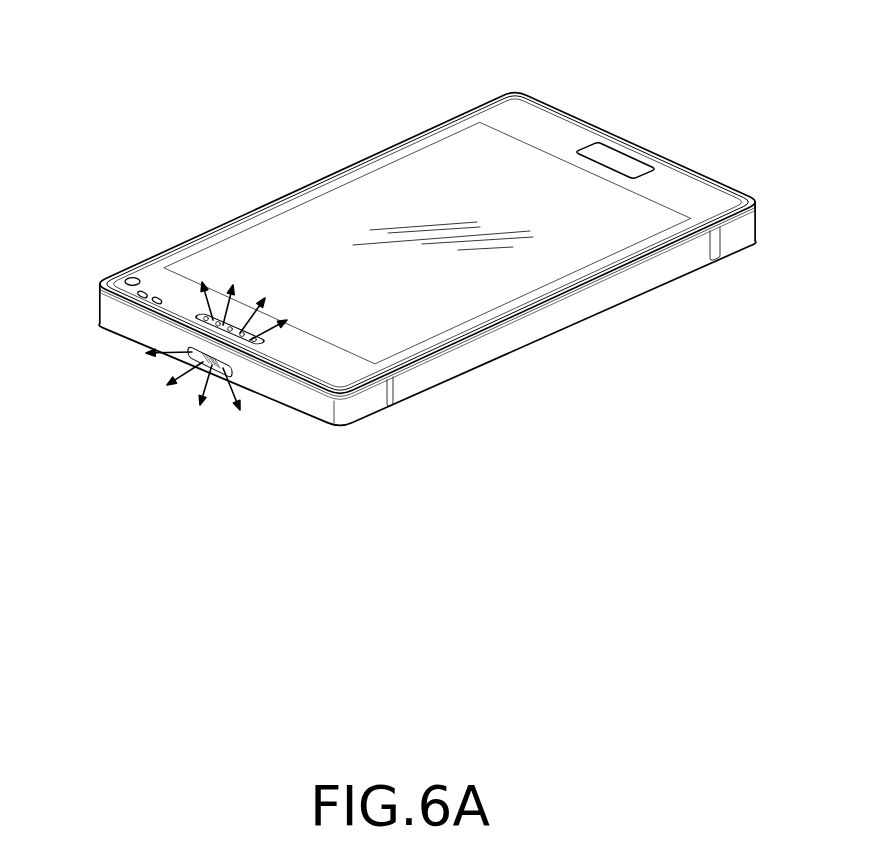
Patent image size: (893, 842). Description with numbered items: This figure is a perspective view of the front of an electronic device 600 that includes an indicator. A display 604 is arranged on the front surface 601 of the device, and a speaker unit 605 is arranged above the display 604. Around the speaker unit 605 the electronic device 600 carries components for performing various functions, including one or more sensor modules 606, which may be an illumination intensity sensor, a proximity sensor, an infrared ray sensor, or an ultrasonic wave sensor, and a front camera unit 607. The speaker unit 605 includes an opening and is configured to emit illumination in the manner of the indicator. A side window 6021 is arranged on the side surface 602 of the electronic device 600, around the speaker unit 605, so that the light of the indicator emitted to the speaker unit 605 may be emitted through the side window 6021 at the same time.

The electronic device 600 is at (448, 74).
The front surface 601 is at (333, 370).
The side surface 602 is at (317, 410).
The side window 6021 is at (205, 365).
The display 604 is at (540, 163).
The speaker unit 605 is at (262, 348).
The sensor module 606 is at (150, 298).
The front camera unit 607 is at (132, 278).